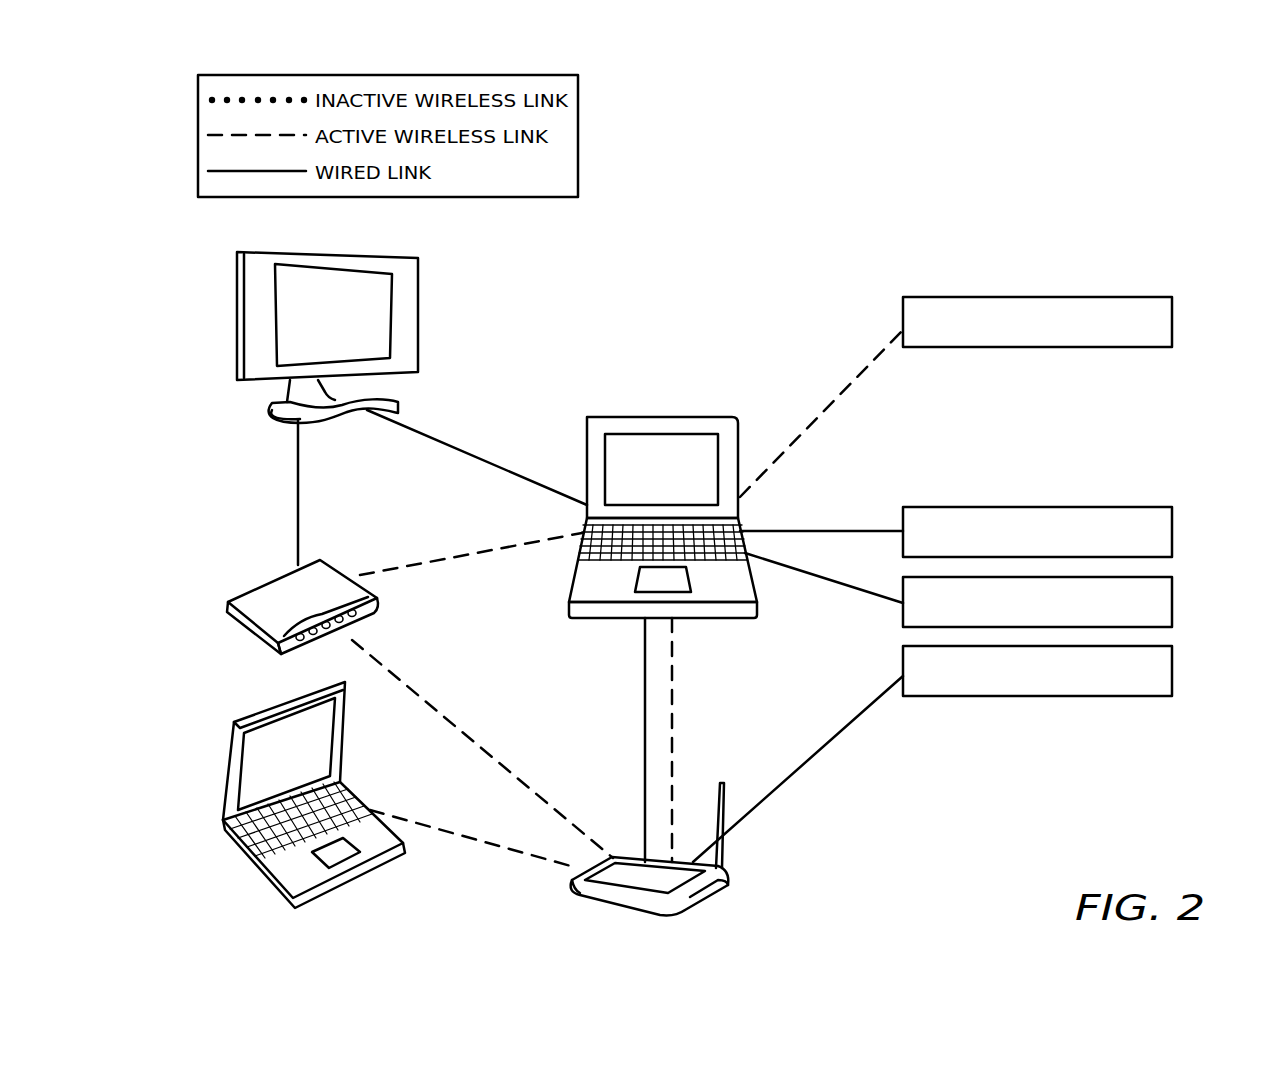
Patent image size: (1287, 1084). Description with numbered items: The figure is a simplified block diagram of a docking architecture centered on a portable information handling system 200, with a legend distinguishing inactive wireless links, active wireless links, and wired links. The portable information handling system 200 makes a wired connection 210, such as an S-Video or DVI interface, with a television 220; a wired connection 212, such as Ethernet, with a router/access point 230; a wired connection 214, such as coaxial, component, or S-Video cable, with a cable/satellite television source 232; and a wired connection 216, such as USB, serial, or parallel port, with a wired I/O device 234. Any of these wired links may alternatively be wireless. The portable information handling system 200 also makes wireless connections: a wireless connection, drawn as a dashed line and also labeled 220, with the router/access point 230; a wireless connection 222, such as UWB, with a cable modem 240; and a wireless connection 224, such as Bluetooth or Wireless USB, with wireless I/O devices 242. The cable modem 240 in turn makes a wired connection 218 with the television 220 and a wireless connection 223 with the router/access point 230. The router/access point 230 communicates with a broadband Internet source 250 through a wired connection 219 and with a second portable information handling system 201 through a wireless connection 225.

The portable information handling system 200 is at (658, 415).
The second portable information handling system 201 is at (367, 872).
The wired connection 210 is at (453, 442).
The wired connection 212 is at (643, 677).
The wired connection 214 is at (827, 528).
The wired connection 216 is at (830, 582).
The wired connection 218 is at (297, 510).
The wired connection 219 is at (828, 745).
The television 220 is at (237, 320).
The wireless connection 222 is at (447, 560).
The wireless connection 223 is at (465, 727).
The wireless connection 224 is at (843, 388).
The wireless connection 225 is at (500, 848).
The router/access point 230 is at (710, 900).
The cable/satellite television source 232 is at (1173, 528).
The wired I/O device 234 is at (1173, 600).
The cable modem 240 is at (225, 605).
The wireless I/O devices 242 is at (1173, 320).
The broadband Internet source 250 is at (1173, 670).